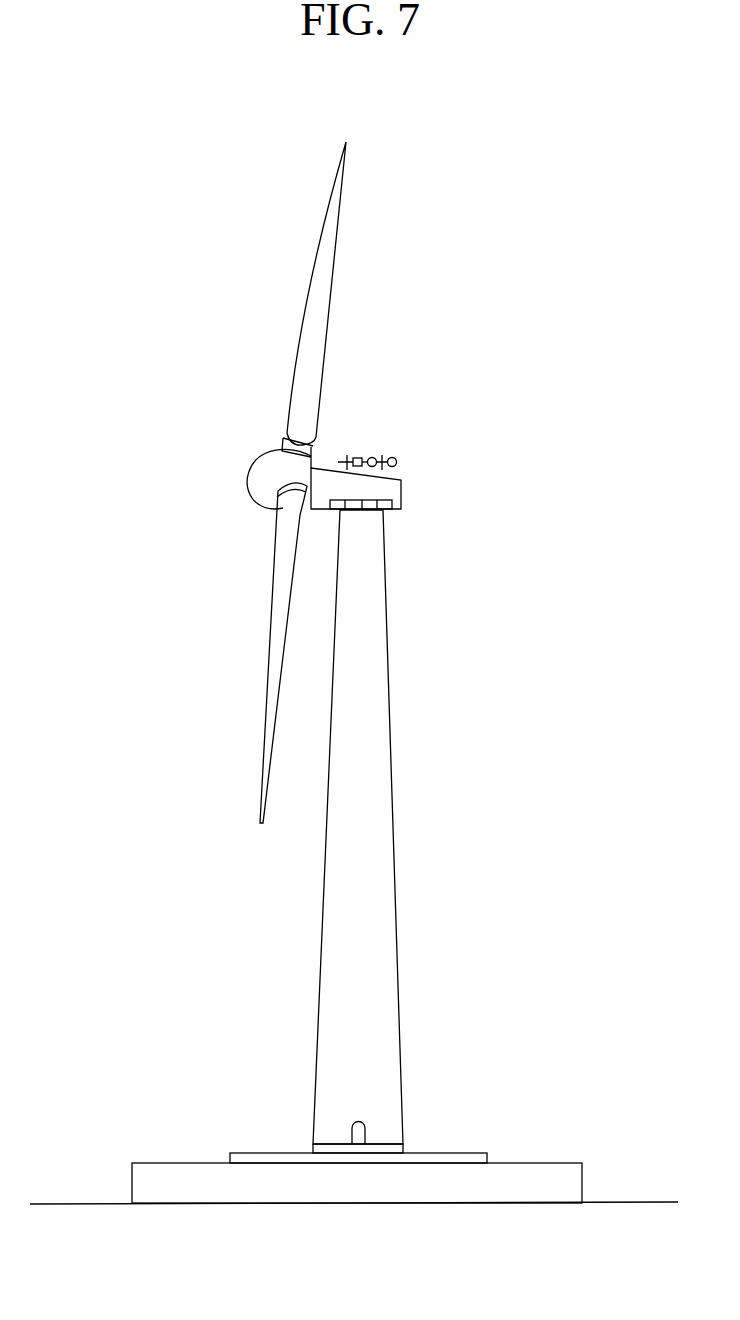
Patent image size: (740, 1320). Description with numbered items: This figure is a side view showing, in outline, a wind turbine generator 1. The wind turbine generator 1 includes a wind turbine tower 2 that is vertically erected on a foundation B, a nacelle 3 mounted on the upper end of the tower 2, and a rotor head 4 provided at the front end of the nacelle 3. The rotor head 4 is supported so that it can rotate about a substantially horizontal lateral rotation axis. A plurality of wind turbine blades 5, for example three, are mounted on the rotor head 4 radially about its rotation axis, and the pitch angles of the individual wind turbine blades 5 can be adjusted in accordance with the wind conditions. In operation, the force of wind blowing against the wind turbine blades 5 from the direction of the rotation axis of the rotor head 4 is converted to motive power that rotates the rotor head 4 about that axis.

The wind turbine generator 1 is at (503, 388).
The wind turbine tower 2 is at (388, 693).
The nacelle 3 is at (412, 468).
The rotor head 4 is at (246, 470).
The wind turbine blade 5 is at (337, 240).
The foundation B is at (543, 1163).